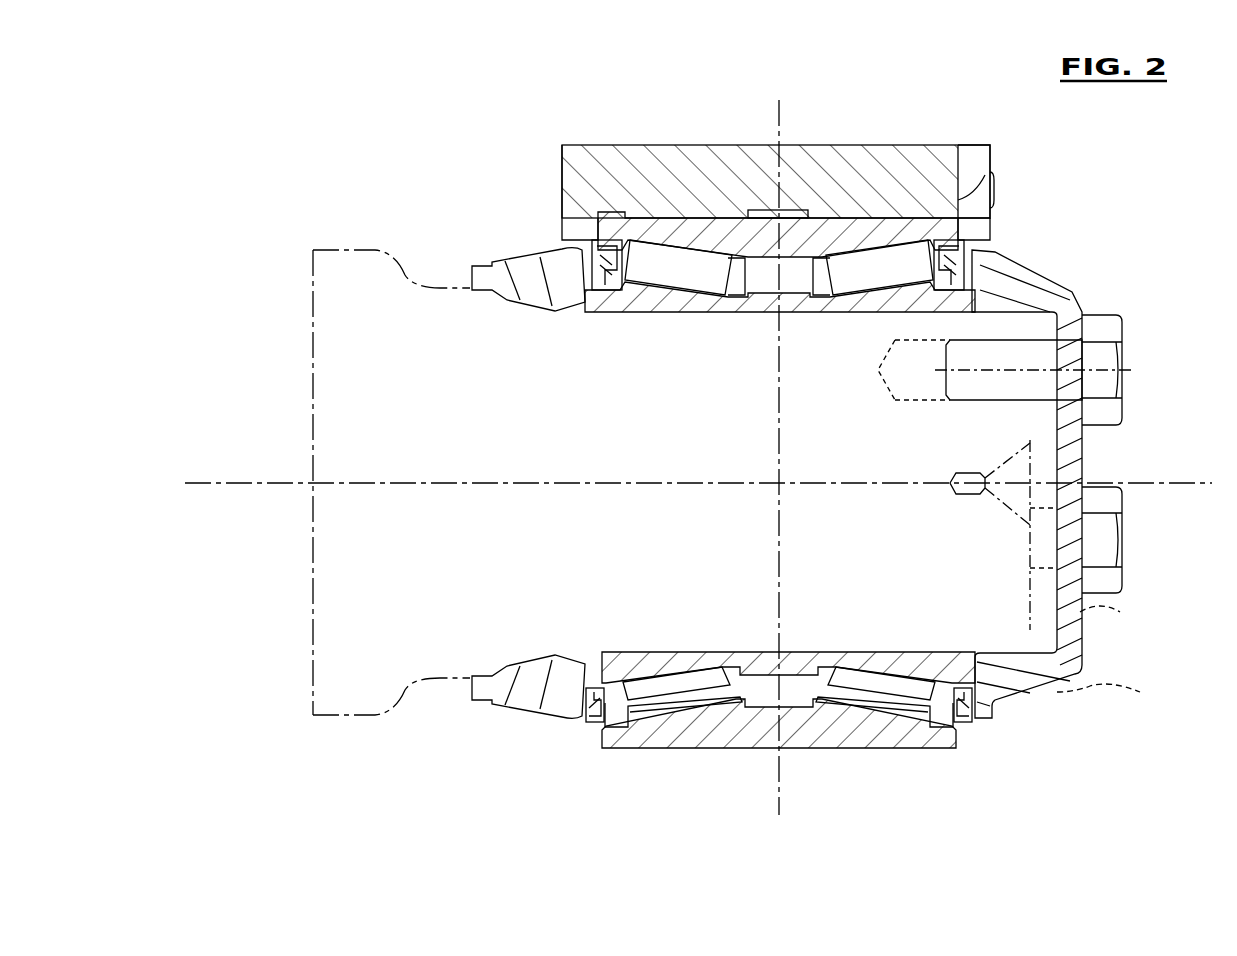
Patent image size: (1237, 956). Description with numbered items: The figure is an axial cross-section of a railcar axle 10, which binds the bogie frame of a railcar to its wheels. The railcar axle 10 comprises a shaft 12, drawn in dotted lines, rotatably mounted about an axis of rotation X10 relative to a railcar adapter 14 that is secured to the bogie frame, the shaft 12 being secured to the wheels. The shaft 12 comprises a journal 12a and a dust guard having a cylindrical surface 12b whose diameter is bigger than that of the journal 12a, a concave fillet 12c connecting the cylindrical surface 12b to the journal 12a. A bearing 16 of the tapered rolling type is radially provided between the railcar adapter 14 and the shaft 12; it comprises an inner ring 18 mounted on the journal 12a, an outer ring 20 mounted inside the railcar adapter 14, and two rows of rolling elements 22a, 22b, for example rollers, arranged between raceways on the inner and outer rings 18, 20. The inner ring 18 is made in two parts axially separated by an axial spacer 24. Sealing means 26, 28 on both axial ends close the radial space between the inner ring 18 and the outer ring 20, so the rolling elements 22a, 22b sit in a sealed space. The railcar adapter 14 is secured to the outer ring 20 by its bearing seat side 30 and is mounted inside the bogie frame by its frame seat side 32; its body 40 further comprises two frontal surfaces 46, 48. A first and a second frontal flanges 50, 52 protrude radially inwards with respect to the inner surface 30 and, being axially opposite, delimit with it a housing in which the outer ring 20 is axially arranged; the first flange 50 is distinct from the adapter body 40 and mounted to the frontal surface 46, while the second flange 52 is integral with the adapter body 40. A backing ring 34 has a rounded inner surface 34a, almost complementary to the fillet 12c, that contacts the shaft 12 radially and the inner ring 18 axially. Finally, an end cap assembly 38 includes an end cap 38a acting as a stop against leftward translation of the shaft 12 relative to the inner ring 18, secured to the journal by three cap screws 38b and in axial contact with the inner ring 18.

The railcar axle 10 is at (482, 110).
The shaft 12 is at (309, 266).
The journal 12a is at (1090, 621).
The cylindrical surface 12b is at (326, 609).
The concave fillet 12c is at (492, 268).
The railcar adapter 14 is at (718, 142).
The bearing 16 is at (803, 698).
The inner ring 18 is at (907, 747).
The outer ring 20 is at (853, 747).
The rolling elements 22a is at (685, 267).
The rolling elements 22b is at (873, 267).
The axial spacer 24 is at (766, 738).
The sealing means 26 is at (591, 747).
The sealing means 28 is at (962, 747).
The bearing seat side 30 is at (656, 233).
The frame seat side 32 is at (855, 145).
The backing ring 34 is at (481, 703).
The inner surface 34a is at (497, 673).
The end cap assembly 38 is at (1088, 441).
The end cap 38a is at (1086, 686).
The cap screws 38b is at (1124, 352).
The body 40 is at (762, 145).
The frontal surface 46 is at (962, 180).
The frontal surface 48 is at (561, 190).
The first frontal flange 50 is at (990, 222).
The second frontal flange 52 is at (562, 211).
The axis of rotation X10 is at (698, 466).